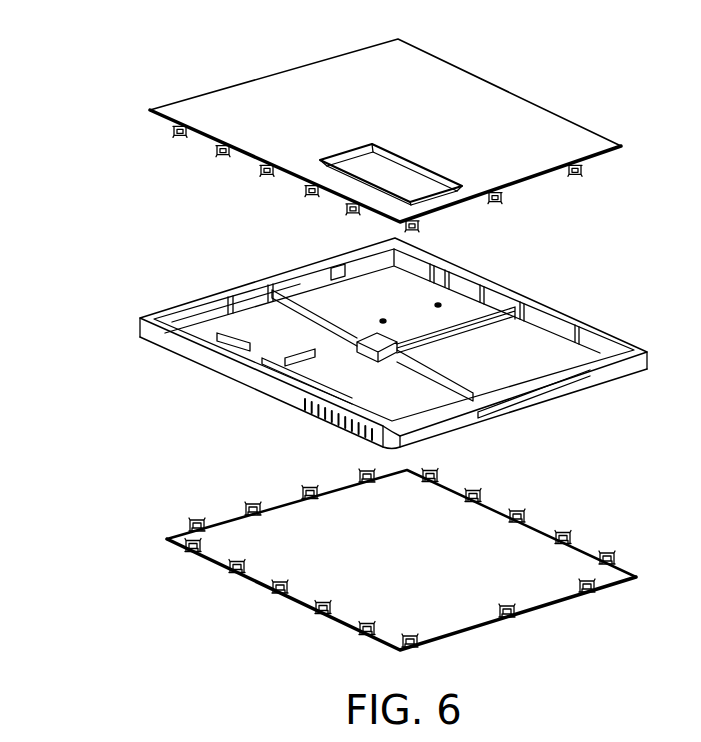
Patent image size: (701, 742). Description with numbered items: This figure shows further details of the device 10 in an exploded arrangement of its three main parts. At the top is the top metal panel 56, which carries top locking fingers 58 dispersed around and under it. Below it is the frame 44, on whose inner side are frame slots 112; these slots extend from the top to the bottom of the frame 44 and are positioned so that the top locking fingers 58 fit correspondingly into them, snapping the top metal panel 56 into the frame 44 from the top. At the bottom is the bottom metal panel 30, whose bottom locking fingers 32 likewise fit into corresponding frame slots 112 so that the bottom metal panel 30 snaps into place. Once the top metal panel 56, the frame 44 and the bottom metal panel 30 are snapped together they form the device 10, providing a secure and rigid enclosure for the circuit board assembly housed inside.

The device 10 is at (100, 113).
The top metal panel 56 is at (534, 99).
The top locking fingers 58 is at (580, 180).
The frame 44 is at (228, 287).
The frame slots 112 is at (519, 291).
The bottom metal panel 30 is at (461, 636).
The bottom locking fingers 32 is at (572, 523).